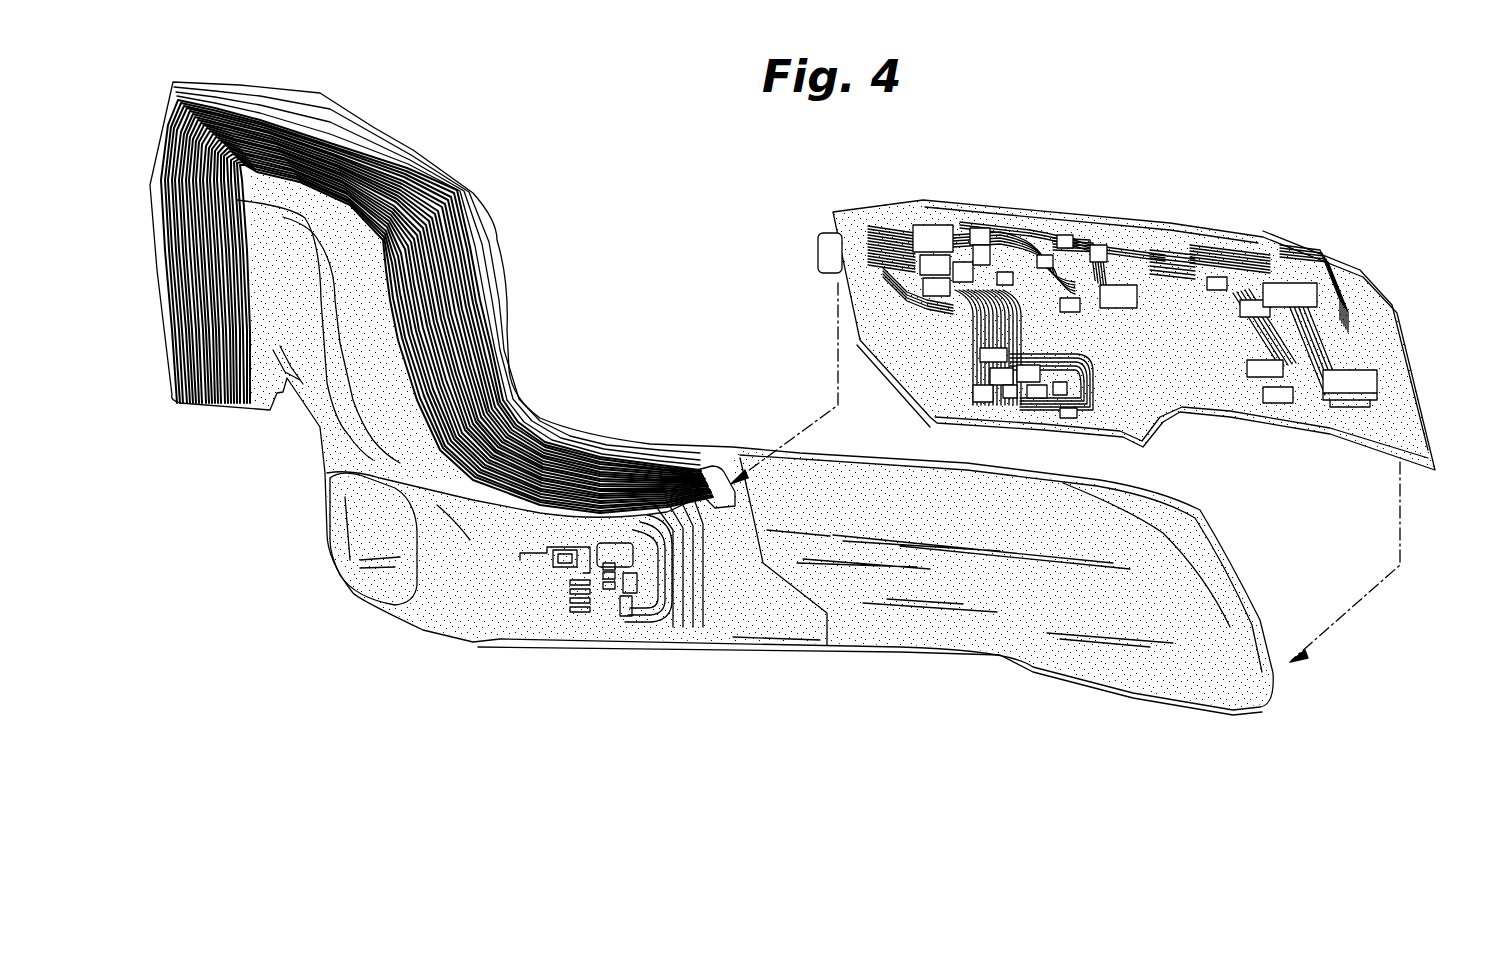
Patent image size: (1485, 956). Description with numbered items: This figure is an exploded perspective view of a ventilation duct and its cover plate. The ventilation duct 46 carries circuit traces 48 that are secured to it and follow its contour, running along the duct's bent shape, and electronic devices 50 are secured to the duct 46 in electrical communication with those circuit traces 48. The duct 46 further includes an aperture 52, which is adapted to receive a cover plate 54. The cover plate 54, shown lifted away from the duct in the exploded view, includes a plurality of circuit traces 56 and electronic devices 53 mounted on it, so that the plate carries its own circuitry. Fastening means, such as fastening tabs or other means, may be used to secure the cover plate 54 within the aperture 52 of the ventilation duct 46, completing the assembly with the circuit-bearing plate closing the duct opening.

The ventilation duct 46 is at (560, 332).
The circuit traces 48 is at (418, 170).
The electronic devices 50 is at (623, 612).
The aperture 52 is at (853, 527).
The electronic devices 53 is at (1363, 380).
The cover plate 54 is at (1151, 345).
The circuit traces 56 is at (1347, 297).